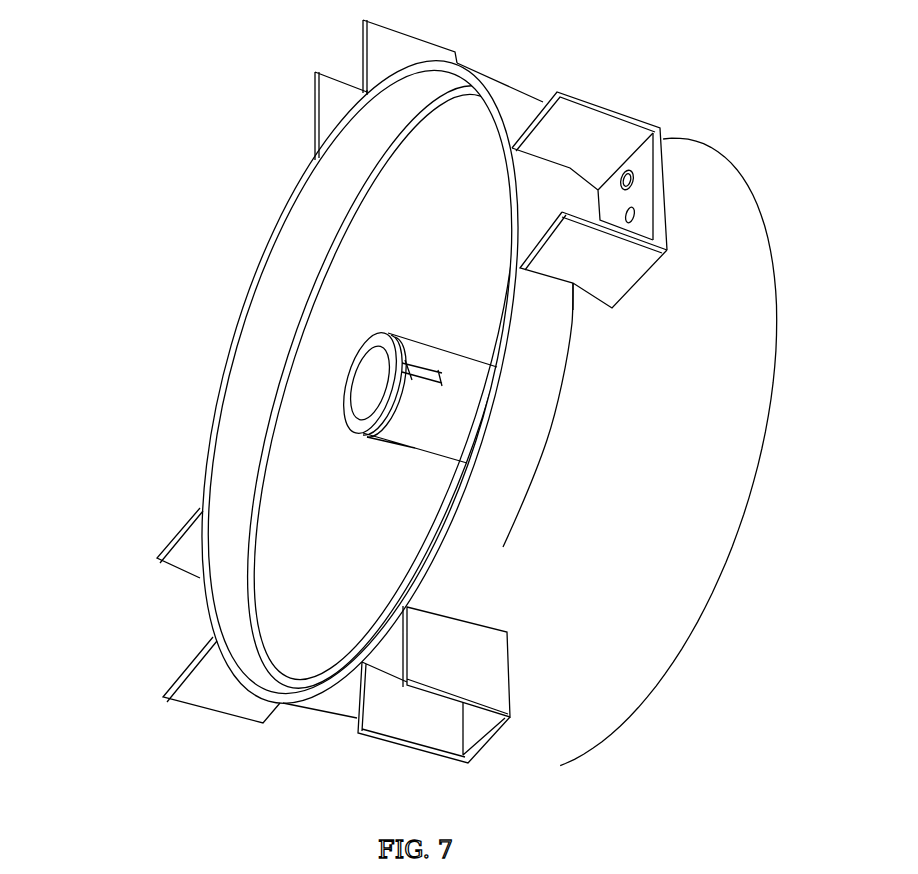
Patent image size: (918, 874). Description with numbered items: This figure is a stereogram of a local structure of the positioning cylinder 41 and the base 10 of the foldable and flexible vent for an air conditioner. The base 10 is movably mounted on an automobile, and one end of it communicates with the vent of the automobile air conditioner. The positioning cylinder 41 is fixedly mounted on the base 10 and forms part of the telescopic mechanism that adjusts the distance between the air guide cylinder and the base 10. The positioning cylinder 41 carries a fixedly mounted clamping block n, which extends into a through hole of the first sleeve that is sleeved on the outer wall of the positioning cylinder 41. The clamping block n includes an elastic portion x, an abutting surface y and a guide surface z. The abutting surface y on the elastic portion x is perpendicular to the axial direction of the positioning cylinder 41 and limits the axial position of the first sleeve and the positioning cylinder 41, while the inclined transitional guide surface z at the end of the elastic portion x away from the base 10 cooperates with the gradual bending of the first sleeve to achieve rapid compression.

The base 10 is at (347, 145).
The positioning cylinder 41 is at (435, 448).
The elastic portion x is at (368, 345).
The abutting surface y is at (352, 422).
The guide surface z is at (410, 358).
The clamping block n is at (152, 203).